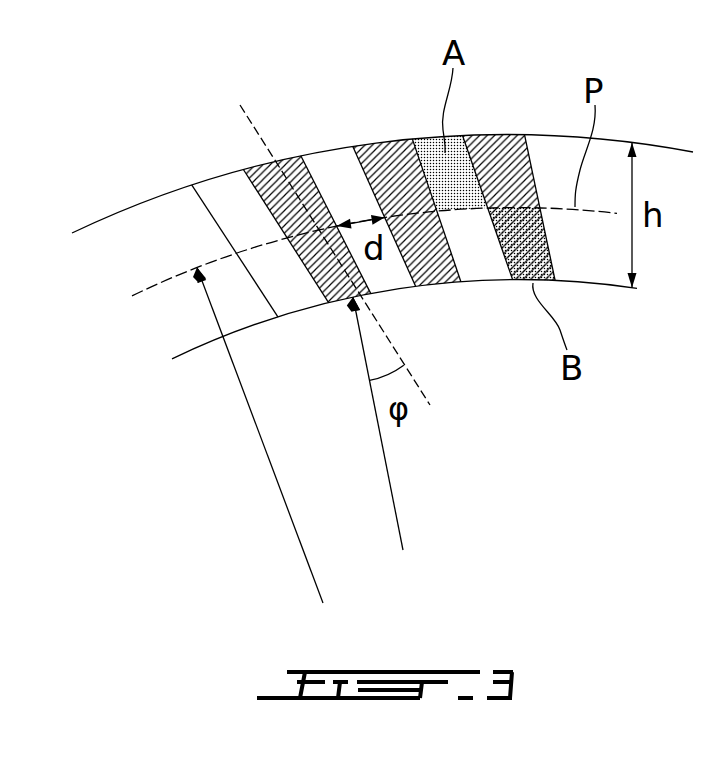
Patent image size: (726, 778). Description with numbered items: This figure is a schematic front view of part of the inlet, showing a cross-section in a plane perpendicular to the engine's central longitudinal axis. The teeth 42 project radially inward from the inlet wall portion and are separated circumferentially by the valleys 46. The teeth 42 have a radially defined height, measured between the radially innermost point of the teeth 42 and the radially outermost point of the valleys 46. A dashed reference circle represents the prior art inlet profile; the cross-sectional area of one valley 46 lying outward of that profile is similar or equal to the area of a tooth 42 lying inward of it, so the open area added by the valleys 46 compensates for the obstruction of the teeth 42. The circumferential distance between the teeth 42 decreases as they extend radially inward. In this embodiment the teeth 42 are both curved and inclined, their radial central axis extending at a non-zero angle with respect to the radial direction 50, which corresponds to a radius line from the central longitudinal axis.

The teeth 42 is at (443, 285).
The valleys 46 is at (333, 162).
The radial direction 50 is at (395, 502).